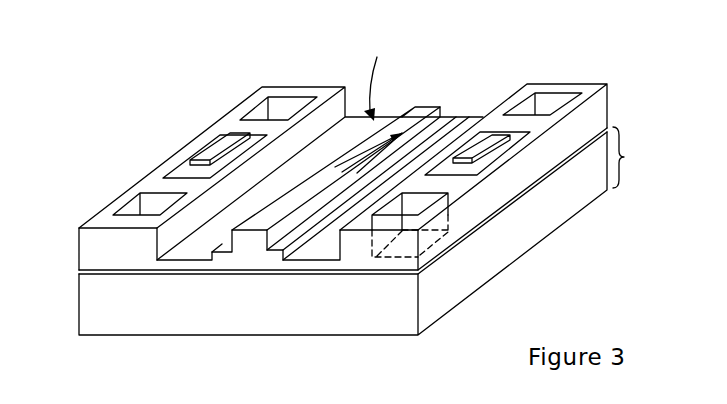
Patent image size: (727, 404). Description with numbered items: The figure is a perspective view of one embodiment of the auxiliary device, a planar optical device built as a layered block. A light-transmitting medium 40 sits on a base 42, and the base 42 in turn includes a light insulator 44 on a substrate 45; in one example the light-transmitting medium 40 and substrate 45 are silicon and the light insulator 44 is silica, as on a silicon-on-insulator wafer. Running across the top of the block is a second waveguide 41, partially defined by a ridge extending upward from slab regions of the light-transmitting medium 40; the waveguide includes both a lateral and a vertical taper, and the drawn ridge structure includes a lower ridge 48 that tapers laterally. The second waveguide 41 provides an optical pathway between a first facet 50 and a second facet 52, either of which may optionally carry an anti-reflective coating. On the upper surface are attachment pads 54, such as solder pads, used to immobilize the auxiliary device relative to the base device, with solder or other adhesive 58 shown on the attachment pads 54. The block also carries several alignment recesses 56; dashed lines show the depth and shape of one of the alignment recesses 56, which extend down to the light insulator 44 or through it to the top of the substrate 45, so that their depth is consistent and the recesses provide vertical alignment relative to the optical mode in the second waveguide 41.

The light-transmitting medium 40 is at (117, 246).
The second waveguide 41 is at (380, 76).
The base 42 is at (636, 157).
The light insulator 44 is at (136, 276).
The substrate 45 is at (213, 323).
The lower ridge 48 is at (418, 107).
The first facet 50 is at (432, 107).
The second facet 52 is at (248, 257).
The attachment pad 54 is at (178, 165).
The alignment recess 56 is at (163, 200).
The solder or other adhesive 58 is at (227, 142).